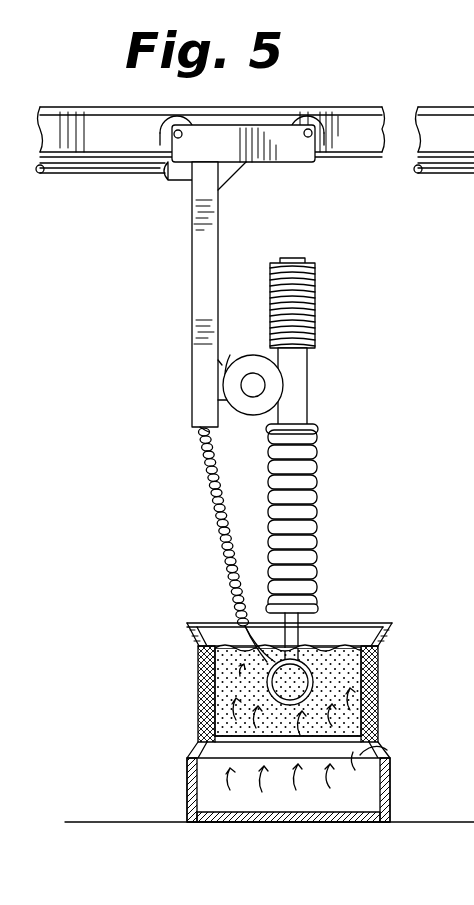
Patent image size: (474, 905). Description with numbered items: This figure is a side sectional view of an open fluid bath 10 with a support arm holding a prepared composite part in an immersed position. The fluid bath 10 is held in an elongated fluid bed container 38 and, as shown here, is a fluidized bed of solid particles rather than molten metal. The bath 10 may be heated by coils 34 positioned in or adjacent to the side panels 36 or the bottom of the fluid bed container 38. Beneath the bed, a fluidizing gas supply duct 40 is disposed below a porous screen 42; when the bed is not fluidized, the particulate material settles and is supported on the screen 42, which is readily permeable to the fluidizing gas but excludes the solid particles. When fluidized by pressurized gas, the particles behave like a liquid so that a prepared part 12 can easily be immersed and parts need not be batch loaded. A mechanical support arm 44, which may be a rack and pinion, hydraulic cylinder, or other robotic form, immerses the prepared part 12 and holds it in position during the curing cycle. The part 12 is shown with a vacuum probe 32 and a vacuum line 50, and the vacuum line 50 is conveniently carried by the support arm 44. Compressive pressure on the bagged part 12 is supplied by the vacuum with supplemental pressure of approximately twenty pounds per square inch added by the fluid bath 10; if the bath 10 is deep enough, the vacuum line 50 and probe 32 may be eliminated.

The fluid bath 10 is at (343, 644).
The prepared composite part 12 is at (314, 646).
The vacuum probe 32 is at (243, 652).
The heating coils 34 is at (199, 680).
The side panels 36 is at (199, 712).
The fluid bed container 38 is at (398, 625).
The fluidizing gas supply duct 40 is at (306, 796).
The porous screen 42 is at (390, 757).
The support arm 44 is at (315, 385).
The vacuum line 50 is at (202, 476).